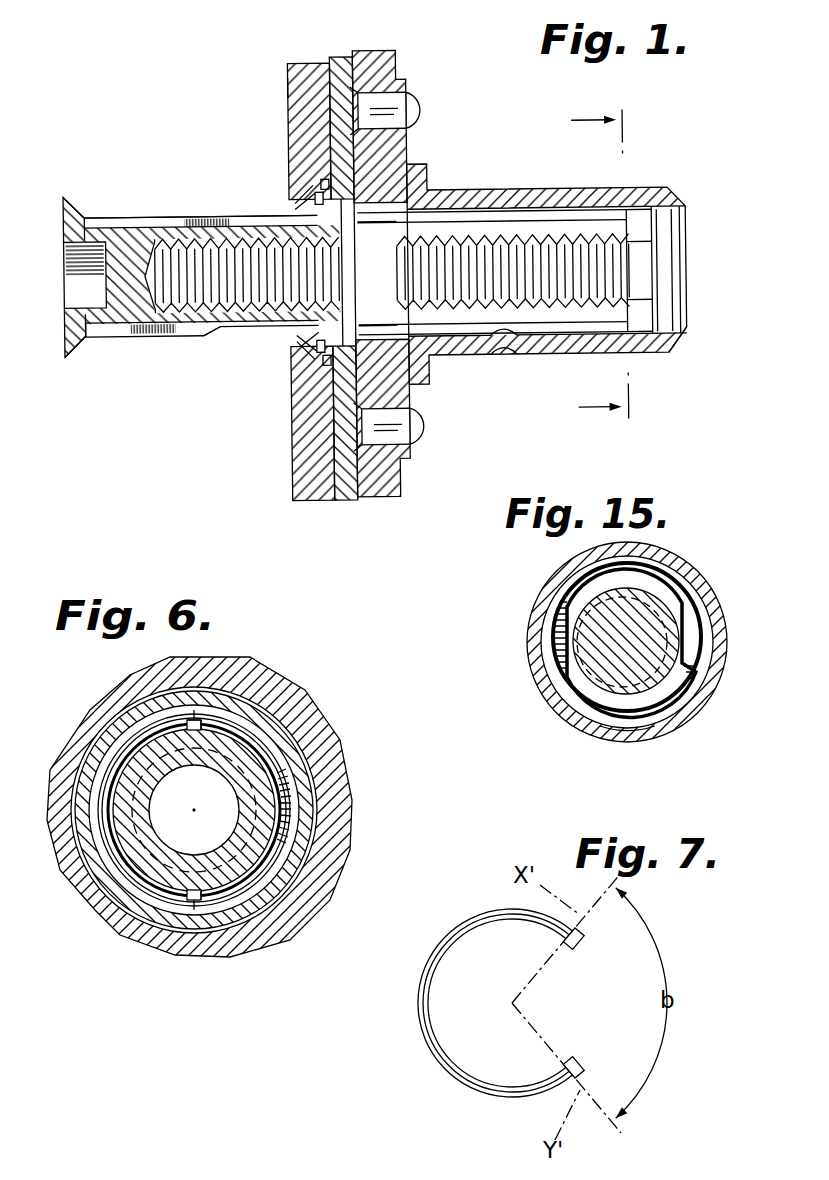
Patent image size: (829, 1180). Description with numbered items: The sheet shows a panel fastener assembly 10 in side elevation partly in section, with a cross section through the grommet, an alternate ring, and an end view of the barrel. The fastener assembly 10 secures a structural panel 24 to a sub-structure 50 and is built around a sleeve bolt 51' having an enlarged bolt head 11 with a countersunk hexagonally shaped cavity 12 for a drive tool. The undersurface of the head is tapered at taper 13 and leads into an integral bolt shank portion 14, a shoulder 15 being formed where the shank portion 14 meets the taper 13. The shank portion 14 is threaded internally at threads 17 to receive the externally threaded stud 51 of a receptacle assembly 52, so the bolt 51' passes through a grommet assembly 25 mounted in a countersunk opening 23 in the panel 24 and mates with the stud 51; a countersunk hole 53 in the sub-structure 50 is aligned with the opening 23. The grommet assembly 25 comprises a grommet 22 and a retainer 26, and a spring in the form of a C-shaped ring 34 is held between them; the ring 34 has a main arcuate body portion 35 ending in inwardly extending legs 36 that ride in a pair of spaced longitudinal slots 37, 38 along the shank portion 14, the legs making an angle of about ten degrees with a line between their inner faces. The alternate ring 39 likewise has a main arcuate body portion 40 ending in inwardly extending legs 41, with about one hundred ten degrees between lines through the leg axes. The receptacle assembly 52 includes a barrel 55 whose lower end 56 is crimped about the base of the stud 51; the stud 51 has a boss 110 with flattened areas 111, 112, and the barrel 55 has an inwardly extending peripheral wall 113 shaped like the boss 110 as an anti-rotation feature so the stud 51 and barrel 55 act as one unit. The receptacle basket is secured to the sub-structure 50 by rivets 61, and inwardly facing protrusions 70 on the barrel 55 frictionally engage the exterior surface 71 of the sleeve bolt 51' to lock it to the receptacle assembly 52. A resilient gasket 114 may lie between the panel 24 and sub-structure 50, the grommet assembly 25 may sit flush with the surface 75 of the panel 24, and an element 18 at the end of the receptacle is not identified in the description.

In FIG. 1, the fastener assembly 10 is at (190, 158).
In FIG. 1, the bolt head 11 is at (75, 356).
In FIG. 1, the countersunk hexagonally shaped cavity 12 is at (75, 298).
In FIG. 1, the taper 13 is at (68, 205).
In FIG. 1, the bolt shank portion 14 is at (202, 275).
In FIG. 6, the bolt shank portion 14 is at (140, 775).
In FIG. 1, the shoulder 15 is at (106, 226).
In FIG. 1, the threads 17 is at (215, 262).
In FIG. 1, the end cap 18 is at (662, 278).
In FIG. 1, the grommet 22 is at (318, 197).
In FIG. 1, the countersunk opening 23 is at (313, 365).
In FIG. 1, the structural panel 24 is at (312, 72).
In FIG. 6, the structural panel 24 is at (293, 895).
In FIG. 1, the grommet assembly 25 is at (296, 352).
In FIG. 6, the grommet assembly 25 is at (314, 797).
In FIG. 6, the retainer 26 is at (272, 840).
In FIG. 6, the C-shaped ring 34 is at (130, 712).
In FIG. 6, the main arcuate body portion 35 is at (122, 862).
In FIG. 6, the legs 36 is at (197, 718).
In FIG. 1, the longitudinal slot 37 is at (160, 220).
In FIG. 6, the longitudinal slot 37 is at (216, 745).
In FIG. 1, the longitudinal slot 38 is at (162, 338).
In FIG. 6, the longitudinal slot 38 is at (201, 902).
In FIG. 7, the ring 39 is at (448, 1085).
In FIG. 7, the main arcuate body portion 40 is at (458, 928).
In FIG. 7, the legs 41 is at (562, 1060).
In FIG. 1, the sub-structure 50 is at (388, 70).
In FIG. 15, the threaded stud 51 is at (588, 615).
In FIG. 1, the bolt 51' is at (105, 370).
In FIG. 1, the receptacle assembly 52 is at (518, 190).
In FIG. 1, the countersunk hole 53 is at (380, 228).
In FIG. 15, the barrel 55 is at (526, 687).
In FIG. 1, the lower end 56 is at (686, 343).
In FIG. 1, the rivets 61 is at (424, 115).
In FIG. 1, the inwardly facing protrusions 70 is at (500, 352).
In FIG. 1, the exterior surface 71 is at (205, 330).
In FIG. 1, the surface 75 is at (290, 90).
In FIG. 1, the boss 110 is at (640, 232).
In FIG. 15, the boss 110 is at (645, 585).
In FIG. 15, the flattened area 111 is at (690, 668).
In FIG. 15, the flattened area 112 is at (562, 652).
In FIG. 1, the inwardly extending peripheral wall 113 is at (645, 340).
In FIG. 15, the inwardly extending peripheral wall 113 is at (633, 728).
In FIG. 1, the resilient gasket 114 is at (345, 503).